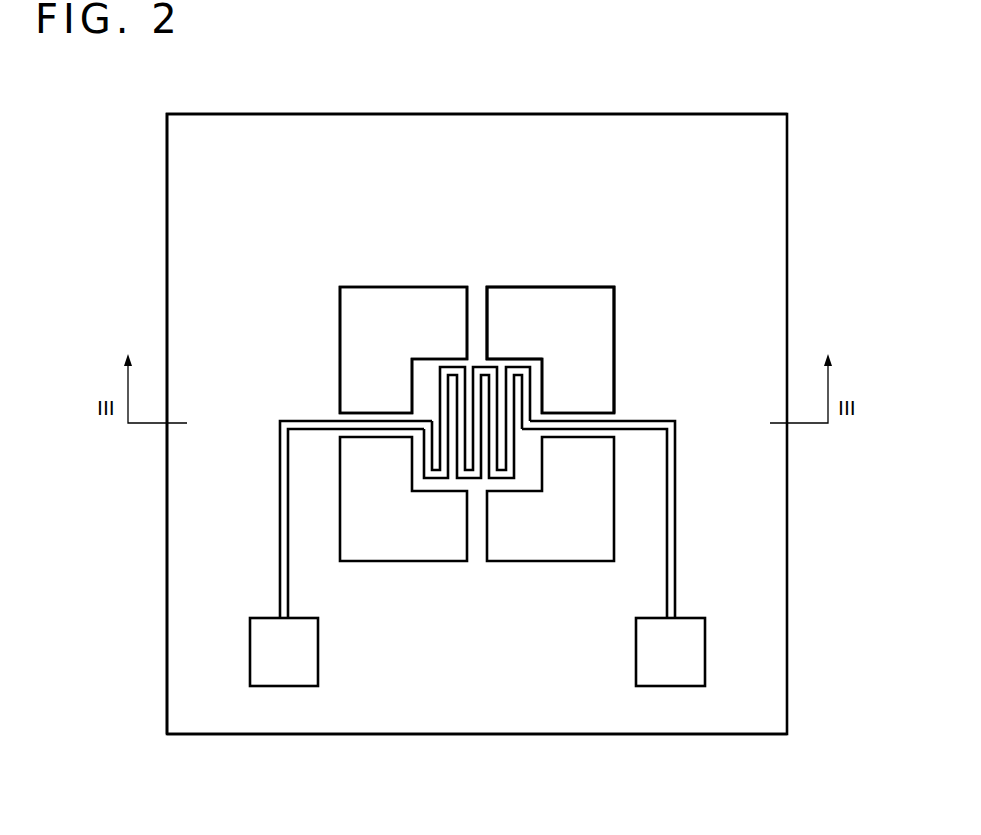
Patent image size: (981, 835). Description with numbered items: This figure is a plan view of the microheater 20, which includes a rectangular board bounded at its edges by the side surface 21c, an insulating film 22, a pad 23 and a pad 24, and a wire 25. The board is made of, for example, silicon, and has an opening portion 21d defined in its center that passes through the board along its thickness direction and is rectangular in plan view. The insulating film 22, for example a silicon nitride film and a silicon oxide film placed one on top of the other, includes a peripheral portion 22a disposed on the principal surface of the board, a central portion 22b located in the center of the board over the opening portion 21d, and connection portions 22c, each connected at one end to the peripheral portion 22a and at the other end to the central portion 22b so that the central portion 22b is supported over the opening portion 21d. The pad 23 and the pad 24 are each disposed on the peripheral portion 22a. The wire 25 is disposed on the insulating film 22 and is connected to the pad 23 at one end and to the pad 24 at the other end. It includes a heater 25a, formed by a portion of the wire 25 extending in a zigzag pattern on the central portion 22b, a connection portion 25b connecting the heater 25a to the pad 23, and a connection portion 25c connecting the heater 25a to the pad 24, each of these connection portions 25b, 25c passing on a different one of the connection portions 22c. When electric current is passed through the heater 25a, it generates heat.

The microheater 20 is at (855, 82).
The side surface 21c is at (731, 735).
The opening portion 21d is at (605, 323).
The insulating film 22 is at (533, 74).
The peripheral portion 22a is at (277, 149).
The central portion 22b is at (420, 379).
The connection portions 22c is at (487, 323).
The pad 23 is at (264, 653).
The pad 24 is at (686, 648).
The wire 25 is at (477, 590).
The heater 25a is at (470, 479).
The connection portion 25b is at (373, 424).
The connection portion 25c is at (592, 424).